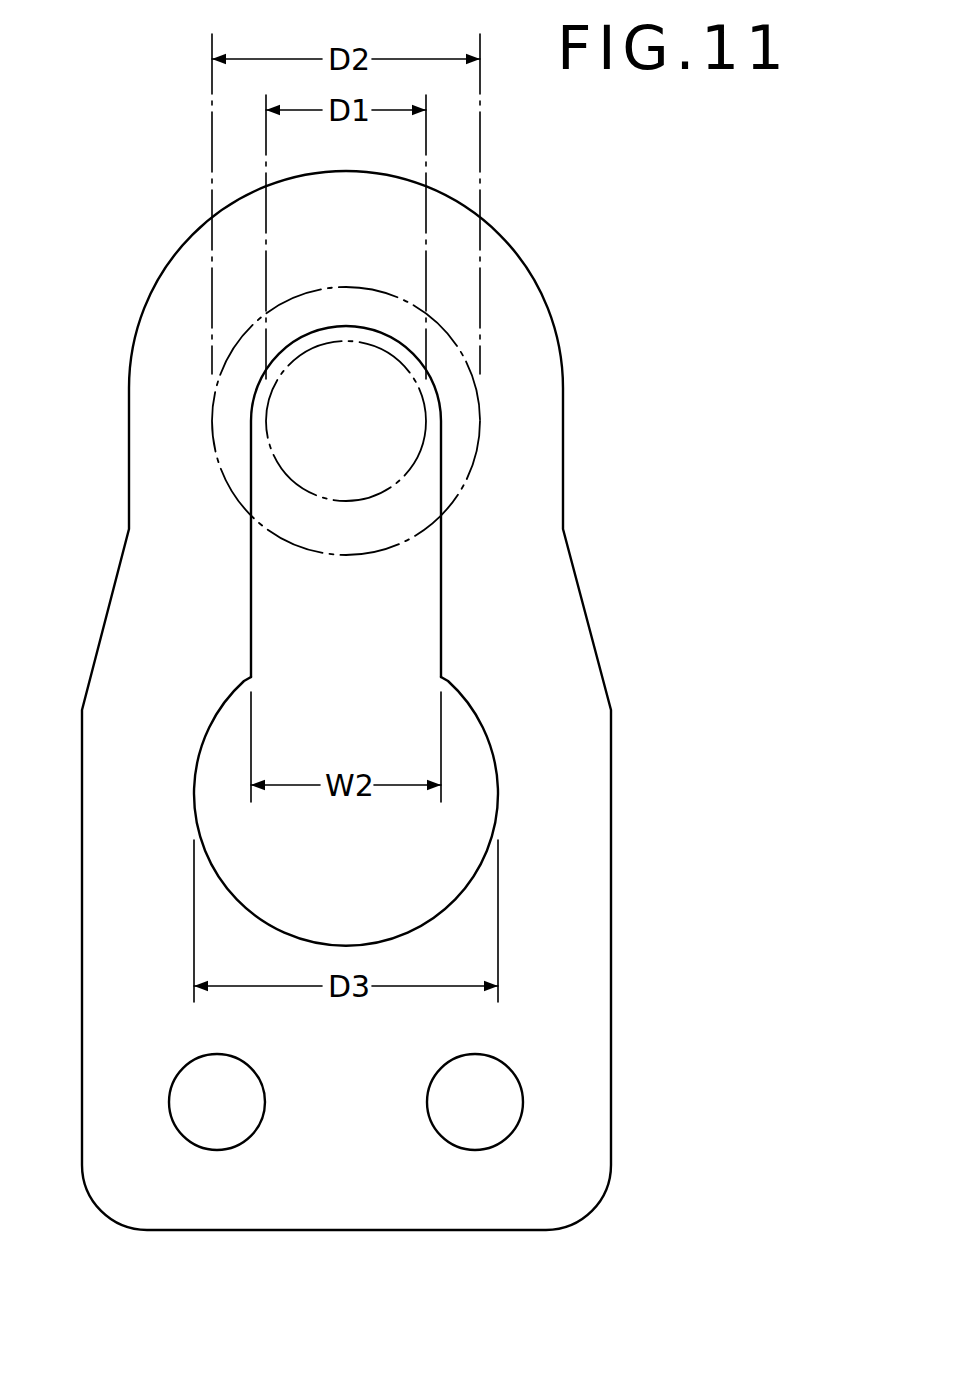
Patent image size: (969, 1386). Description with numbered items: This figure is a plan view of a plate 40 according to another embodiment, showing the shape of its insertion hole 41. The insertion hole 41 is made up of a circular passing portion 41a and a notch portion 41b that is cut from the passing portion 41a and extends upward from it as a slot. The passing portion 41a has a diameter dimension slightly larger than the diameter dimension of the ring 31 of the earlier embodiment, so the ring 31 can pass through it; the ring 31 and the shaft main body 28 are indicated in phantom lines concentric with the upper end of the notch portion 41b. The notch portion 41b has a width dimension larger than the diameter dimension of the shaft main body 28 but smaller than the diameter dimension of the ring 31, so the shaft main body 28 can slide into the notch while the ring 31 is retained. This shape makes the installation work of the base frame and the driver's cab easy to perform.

The shaft main body 28 is at (398, 470).
The ring 31 is at (478, 427).
The plate 40 is at (339, 1228).
The insertion hole 41 is at (478, 636).
The passing portion 41a is at (447, 811).
The notch portion 41b is at (437, 612).